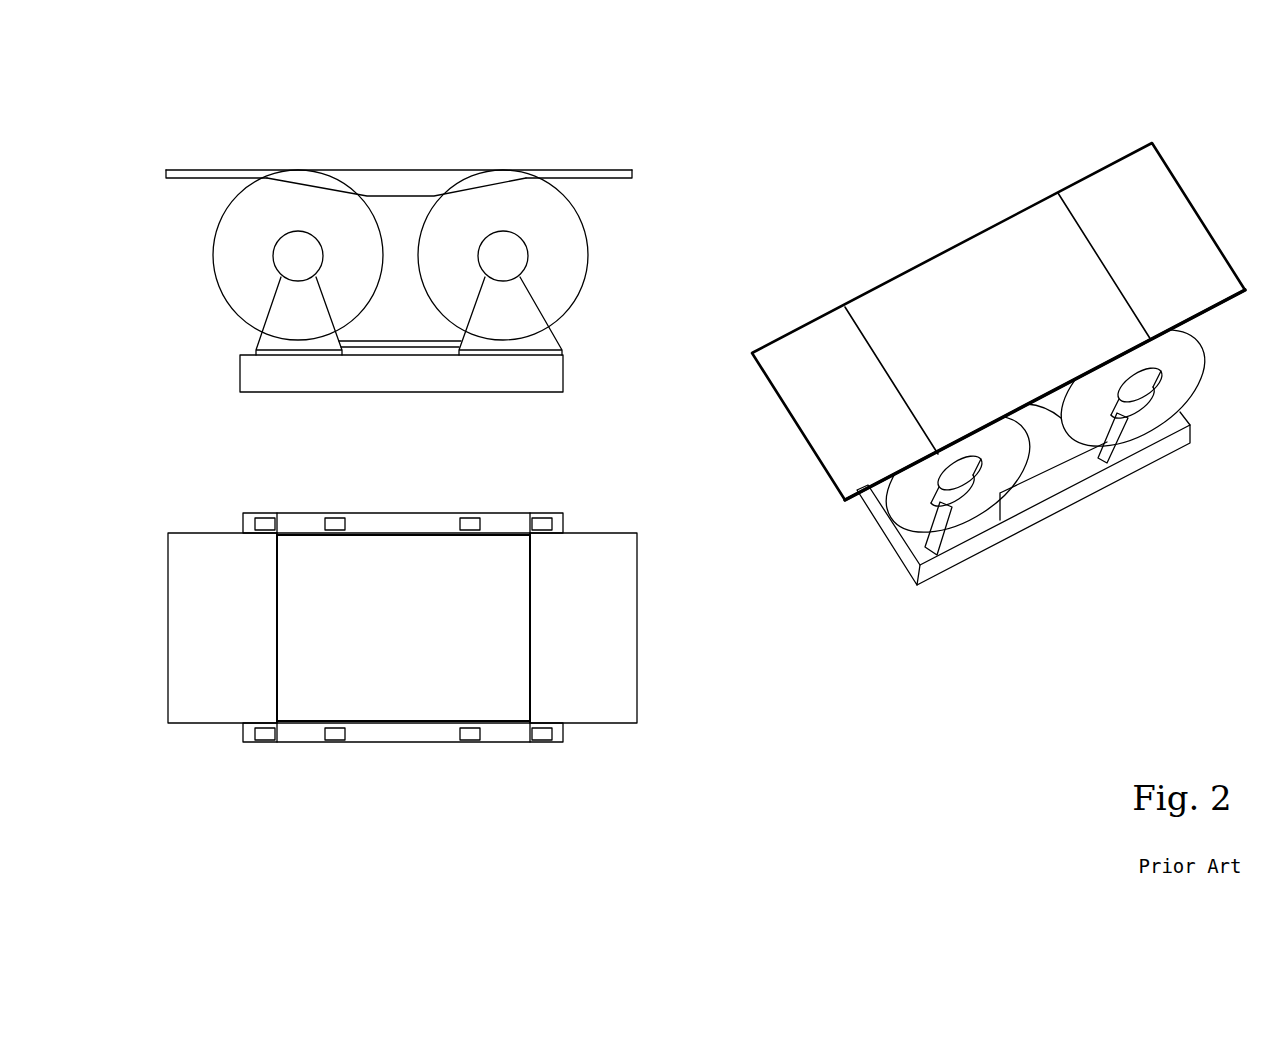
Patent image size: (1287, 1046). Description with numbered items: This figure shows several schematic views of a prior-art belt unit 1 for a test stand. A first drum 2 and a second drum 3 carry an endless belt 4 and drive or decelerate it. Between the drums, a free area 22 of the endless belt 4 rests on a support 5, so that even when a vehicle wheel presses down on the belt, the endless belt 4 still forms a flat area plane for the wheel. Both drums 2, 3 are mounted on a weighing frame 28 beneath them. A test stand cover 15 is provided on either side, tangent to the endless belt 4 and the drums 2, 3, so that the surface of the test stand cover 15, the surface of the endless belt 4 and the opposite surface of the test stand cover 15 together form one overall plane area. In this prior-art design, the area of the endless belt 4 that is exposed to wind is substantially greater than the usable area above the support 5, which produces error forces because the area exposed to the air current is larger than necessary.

The belt unit 1 is at (321, 145).
The first drum 2 is at (240, 268).
The second drum 3 is at (556, 251).
The endless belt 4 is at (410, 343).
The support 5 is at (408, 180).
The test stand cover 15 is at (229, 170).
The free area 22 is at (477, 613).
The weighing frame 28 is at (330, 375).